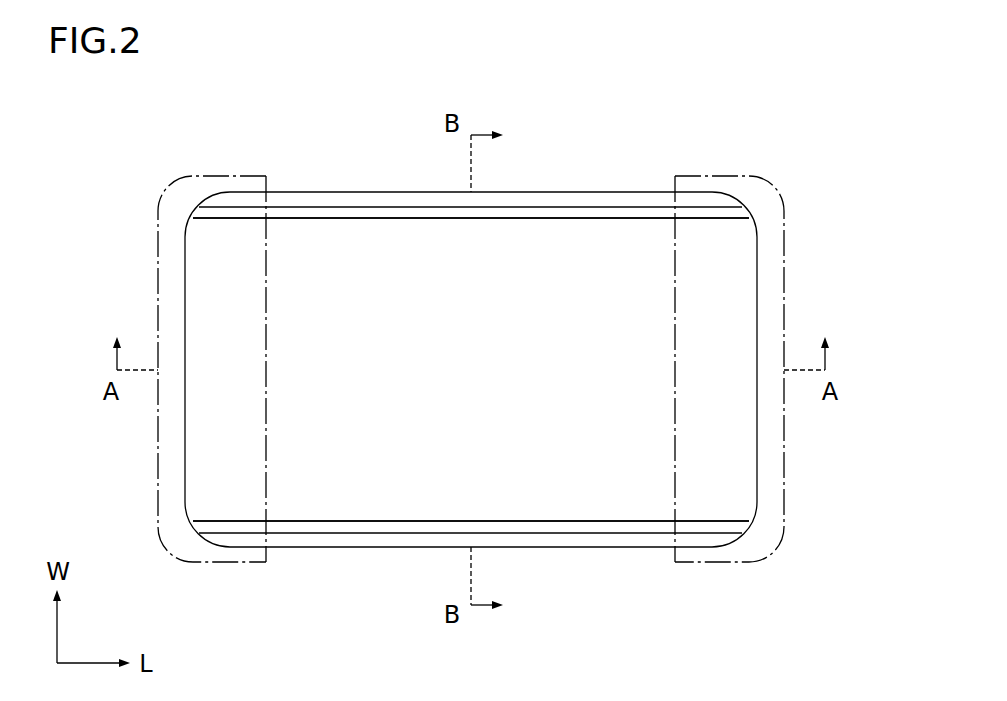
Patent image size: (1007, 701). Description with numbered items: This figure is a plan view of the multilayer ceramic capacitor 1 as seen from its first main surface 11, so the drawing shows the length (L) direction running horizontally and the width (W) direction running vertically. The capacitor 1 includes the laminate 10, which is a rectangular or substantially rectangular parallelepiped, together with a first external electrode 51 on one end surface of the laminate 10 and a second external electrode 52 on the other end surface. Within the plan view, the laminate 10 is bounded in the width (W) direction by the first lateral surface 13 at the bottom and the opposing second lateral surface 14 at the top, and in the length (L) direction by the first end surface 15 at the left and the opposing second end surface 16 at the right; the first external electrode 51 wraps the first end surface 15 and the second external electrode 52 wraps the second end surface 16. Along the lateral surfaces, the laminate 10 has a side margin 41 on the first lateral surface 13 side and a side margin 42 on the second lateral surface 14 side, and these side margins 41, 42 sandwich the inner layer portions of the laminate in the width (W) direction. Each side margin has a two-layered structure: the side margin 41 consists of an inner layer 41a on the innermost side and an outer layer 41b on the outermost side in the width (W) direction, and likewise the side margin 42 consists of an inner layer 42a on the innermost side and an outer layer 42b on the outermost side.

The multilayer ceramic capacitor 1 is at (129, 126).
The laminate 10 is at (648, 185).
The first main surface 11 is at (425, 282).
The first lateral surface 13 is at (590, 548).
The second lateral surface 14 is at (325, 190).
The first end surface 15 is at (185, 450).
The second end surface 16 is at (757, 437).
The side margin 41 is at (410, 630).
The inner layer 41a is at (307, 527).
The outer layer 41b is at (370, 540).
The side margin 42 is at (520, 112).
The inner layer 42a is at (528, 213).
The outer layer 42b is at (592, 200).
The first external electrode 51 is at (162, 280).
The second external electrode 52 is at (778, 280).